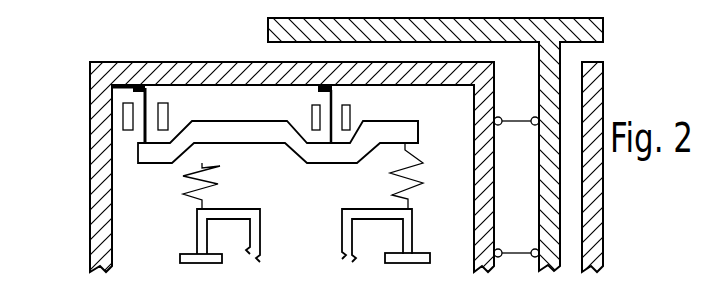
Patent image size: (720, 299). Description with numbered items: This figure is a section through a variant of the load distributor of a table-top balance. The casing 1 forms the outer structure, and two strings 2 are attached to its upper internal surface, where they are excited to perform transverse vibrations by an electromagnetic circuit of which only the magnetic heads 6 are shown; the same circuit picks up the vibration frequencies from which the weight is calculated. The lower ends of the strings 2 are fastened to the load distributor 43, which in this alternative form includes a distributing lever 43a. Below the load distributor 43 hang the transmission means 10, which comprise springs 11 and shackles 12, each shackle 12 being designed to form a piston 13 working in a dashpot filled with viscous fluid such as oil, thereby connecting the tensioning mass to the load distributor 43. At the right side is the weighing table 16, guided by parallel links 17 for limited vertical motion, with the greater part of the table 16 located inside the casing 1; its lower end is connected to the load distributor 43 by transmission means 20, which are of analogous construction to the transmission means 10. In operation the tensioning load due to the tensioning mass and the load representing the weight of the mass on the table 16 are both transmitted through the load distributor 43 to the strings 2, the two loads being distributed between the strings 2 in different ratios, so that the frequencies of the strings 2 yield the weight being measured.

The casing 1 is at (86, 217).
The strings 2 is at (113, 98).
The magnetic heads 6 is at (316, 121).
The transmission means 10 is at (157, 285).
The springs 11 is at (186, 189).
The shackles 12 is at (238, 211).
The piston 13 is at (196, 259).
The weighing table 16 is at (597, 34).
The parallel links 17 is at (513, 121).
The transmission means 20 is at (430, 270).
The load distributor 43 is at (128, 152).
The distributing lever 43a is at (379, 131).